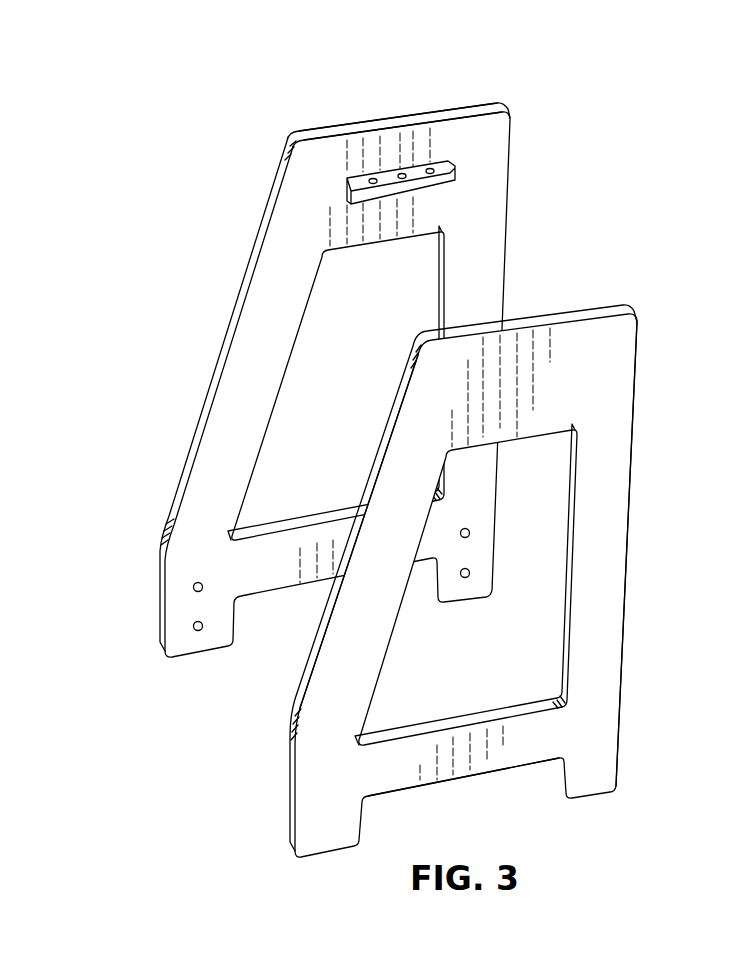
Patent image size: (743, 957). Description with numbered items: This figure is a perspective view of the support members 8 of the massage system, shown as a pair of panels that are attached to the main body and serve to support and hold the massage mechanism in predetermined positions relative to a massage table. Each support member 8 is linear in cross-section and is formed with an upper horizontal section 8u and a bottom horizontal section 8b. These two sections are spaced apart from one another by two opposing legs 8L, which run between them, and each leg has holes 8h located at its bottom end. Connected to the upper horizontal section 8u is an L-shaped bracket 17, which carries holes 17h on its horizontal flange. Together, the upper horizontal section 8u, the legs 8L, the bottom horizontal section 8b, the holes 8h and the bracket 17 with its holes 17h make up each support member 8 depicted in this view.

The support member 8 is at (623, 305).
The upper horizontal section 8u is at (437, 109).
The leg 8L is at (409, 491).
The hole 8h is at (193, 582).
The bottom horizontal section 8b is at (458, 755).
The L-shaped bracket 17 is at (359, 178).
The hole 17h is at (400, 172).